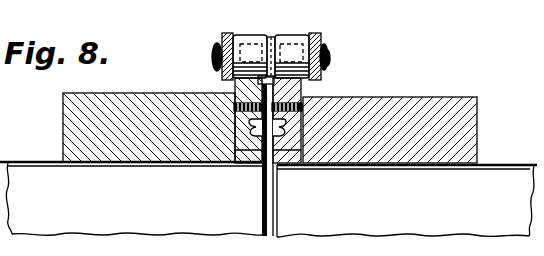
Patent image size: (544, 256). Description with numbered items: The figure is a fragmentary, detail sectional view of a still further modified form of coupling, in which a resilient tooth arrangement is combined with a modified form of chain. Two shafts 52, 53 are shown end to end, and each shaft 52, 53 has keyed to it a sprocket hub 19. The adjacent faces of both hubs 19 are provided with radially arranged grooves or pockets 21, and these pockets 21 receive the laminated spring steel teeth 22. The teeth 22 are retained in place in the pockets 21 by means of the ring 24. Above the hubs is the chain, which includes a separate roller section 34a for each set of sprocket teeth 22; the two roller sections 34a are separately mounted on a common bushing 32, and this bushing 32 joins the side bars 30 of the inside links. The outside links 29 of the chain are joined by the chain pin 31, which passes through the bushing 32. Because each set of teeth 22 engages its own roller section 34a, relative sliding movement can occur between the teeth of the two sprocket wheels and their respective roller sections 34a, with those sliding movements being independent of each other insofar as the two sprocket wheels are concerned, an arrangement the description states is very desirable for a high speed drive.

The sprocket hub 19 is at (148, 84).
The radially arranged grooves or pockets 21 is at (244, 164).
The laminated spring steel teeth 22 is at (235, 83).
The ring 24 is at (252, 128).
The outside links 29 is at (213, 40).
The side bars 30 is at (226, 34).
The chain pin 31 is at (330, 59).
The common bushing 32 is at (271, 36).
The roller section 34a is at (290, 29).
The shaft 52 is at (131, 198).
The shaft 53 is at (407, 201).